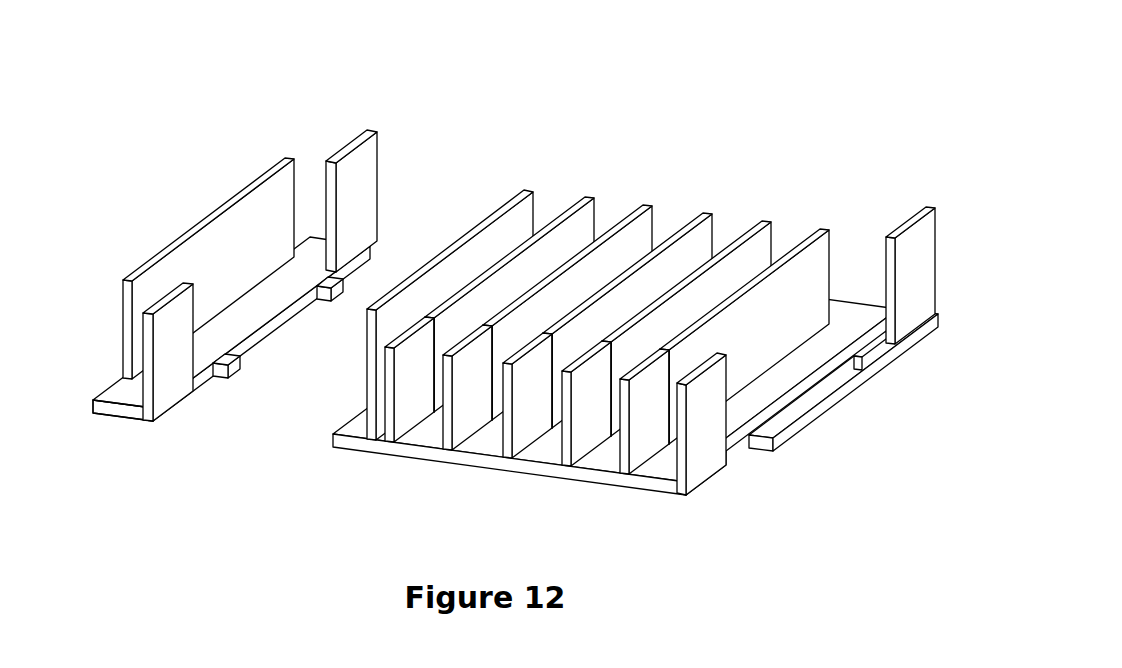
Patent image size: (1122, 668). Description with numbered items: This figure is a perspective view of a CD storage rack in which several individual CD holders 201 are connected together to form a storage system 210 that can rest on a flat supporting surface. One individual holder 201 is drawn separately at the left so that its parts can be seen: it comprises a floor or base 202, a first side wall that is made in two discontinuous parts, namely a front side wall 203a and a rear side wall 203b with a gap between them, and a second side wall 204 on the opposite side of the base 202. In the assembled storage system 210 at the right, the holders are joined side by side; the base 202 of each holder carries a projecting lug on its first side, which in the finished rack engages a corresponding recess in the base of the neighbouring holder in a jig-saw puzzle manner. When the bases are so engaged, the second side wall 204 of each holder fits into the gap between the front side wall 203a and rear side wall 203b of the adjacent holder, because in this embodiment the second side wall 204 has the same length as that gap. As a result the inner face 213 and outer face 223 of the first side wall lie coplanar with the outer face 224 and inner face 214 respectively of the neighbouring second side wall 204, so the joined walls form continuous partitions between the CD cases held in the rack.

The individual CD holder 201 is at (334, 140).
The base 202 is at (125, 393).
The front side wall 203a is at (170, 373).
The rear side wall 203b is at (382, 188).
The second side wall 204 is at (190, 268).
The storage system 210 is at (692, 108).
The inner face of the first side wall 213 is at (778, 205).
The inner face of the second side wall 214 is at (528, 232).
The outer face of the first side wall 223 is at (793, 210).
The outer face of the second side wall 224 is at (367, 340).